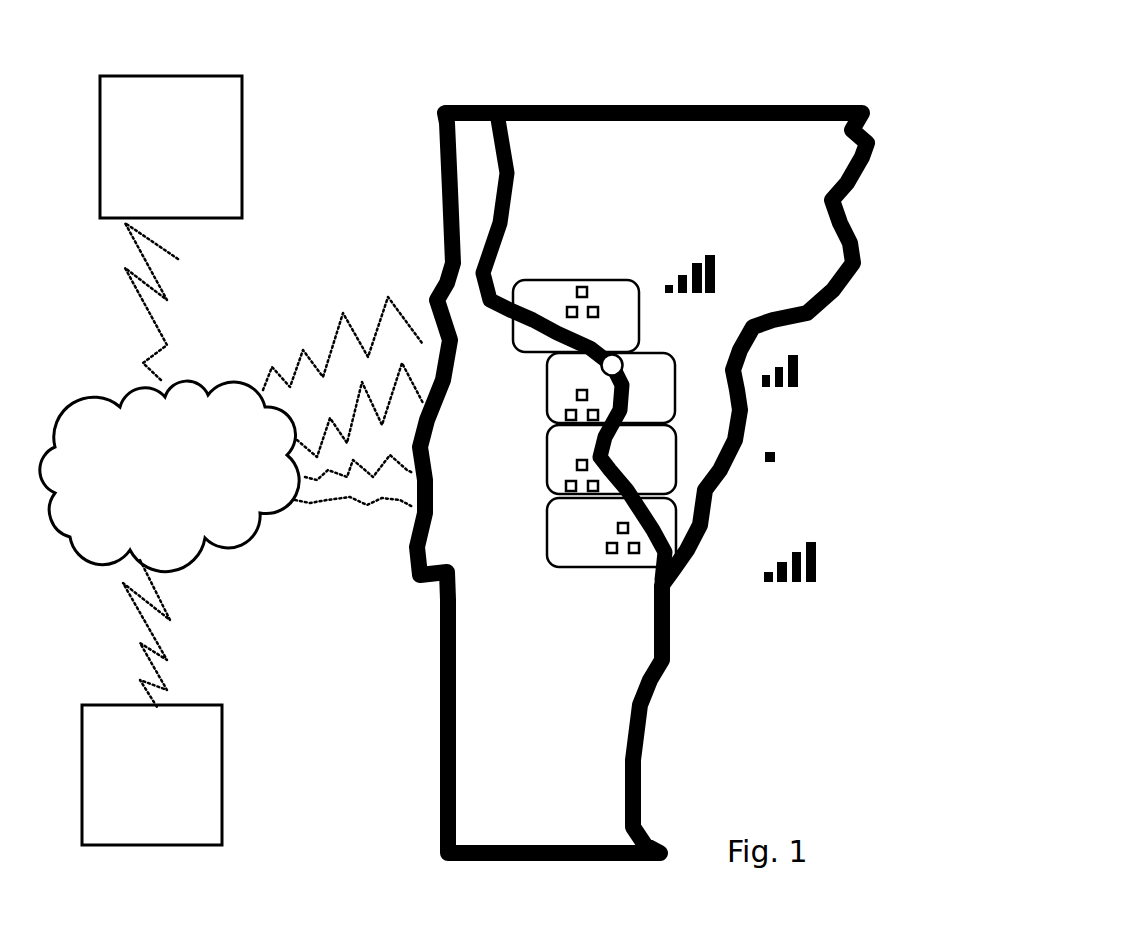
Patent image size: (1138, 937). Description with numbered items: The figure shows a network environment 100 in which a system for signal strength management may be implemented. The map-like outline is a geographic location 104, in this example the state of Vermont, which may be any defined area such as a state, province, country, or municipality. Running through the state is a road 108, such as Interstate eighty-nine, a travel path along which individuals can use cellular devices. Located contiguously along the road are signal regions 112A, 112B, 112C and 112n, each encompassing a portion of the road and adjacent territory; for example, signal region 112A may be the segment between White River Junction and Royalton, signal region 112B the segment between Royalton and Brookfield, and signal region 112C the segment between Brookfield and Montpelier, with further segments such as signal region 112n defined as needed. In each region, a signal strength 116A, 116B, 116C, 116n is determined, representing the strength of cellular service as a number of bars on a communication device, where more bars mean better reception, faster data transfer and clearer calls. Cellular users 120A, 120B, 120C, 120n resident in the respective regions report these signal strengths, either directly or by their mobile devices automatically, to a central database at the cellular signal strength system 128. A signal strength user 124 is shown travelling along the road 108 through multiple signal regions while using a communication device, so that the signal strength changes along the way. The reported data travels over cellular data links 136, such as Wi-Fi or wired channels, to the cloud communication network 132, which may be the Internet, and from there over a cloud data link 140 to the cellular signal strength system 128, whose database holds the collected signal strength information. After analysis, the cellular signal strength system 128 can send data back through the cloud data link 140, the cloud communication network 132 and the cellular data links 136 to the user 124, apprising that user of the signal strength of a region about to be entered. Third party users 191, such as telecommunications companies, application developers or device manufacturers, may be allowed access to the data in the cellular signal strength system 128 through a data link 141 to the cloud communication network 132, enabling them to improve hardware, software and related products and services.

The network environment 100 is at (357, 53).
The geographic location 104 is at (601, 96).
The road 108 is at (527, 180).
The signal region 112A is at (715, 294).
The signal region 112B is at (676, 388).
The signal region 112C is at (676, 460).
The signal region 112n is at (678, 532).
The signal strength 116A is at (717, 265).
The signal strength 116B is at (808, 368).
The signal strength 116C is at (778, 459).
The signal strength 116n is at (820, 563).
The cellular users 120A is at (570, 308).
The cellular users 120B is at (611, 388).
The cellular users 120C is at (611, 459).
The cellular users 120n is at (611, 532).
The signal strength user 124 is at (612, 355).
The cellular signal strength system 128 is at (237, 157).
The cloud communication network 132 is at (169, 476).
The cellular data links 136 is at (348, 440).
The cloud data link 140 is at (167, 297).
The data link 141 is at (167, 650).
The 3rd party users 191 is at (217, 783).